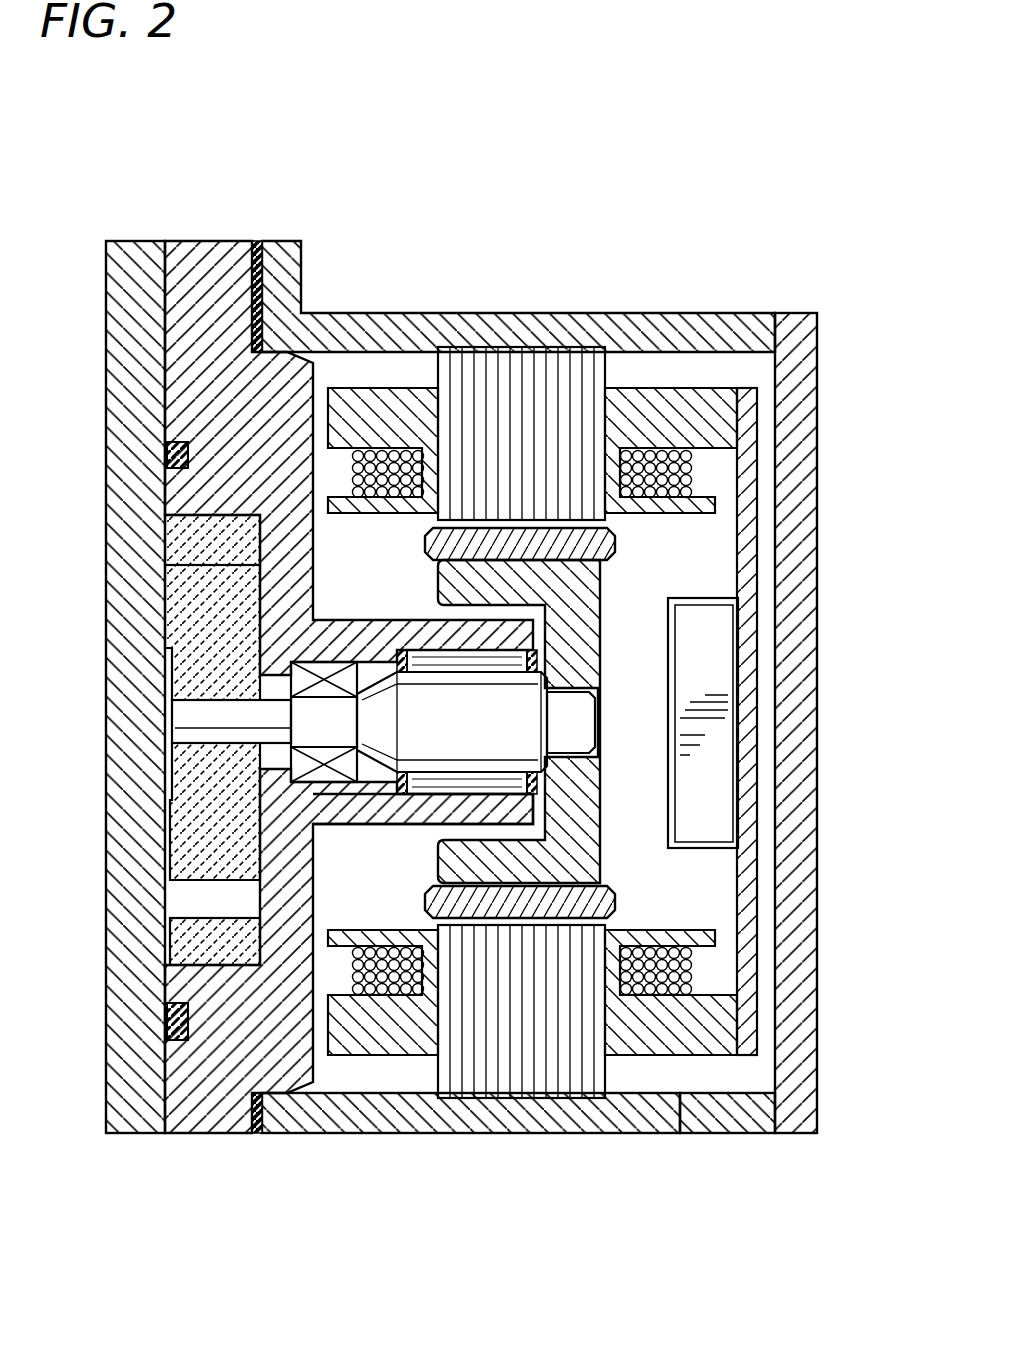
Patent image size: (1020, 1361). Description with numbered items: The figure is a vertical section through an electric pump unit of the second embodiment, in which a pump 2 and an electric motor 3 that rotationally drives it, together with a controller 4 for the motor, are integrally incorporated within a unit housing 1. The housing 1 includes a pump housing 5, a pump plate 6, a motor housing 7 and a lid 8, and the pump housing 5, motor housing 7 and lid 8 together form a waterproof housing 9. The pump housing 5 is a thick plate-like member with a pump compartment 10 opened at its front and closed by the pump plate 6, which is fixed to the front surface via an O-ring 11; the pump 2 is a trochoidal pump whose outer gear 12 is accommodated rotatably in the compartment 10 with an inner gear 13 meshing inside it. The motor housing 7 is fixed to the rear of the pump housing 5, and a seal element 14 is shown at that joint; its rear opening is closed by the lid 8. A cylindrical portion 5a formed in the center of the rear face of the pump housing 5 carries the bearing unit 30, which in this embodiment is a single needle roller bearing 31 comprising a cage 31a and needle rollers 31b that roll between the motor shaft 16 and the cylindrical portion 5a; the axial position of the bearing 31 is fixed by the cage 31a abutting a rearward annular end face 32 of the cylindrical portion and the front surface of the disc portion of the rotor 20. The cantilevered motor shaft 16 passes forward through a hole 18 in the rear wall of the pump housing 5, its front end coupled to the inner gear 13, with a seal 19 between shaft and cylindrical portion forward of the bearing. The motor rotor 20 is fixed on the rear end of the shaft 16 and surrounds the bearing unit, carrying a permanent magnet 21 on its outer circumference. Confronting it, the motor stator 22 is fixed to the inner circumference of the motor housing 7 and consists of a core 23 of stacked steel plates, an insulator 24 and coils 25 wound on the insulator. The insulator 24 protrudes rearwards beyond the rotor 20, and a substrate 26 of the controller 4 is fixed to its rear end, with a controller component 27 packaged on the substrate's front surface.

The pump housing 1 is at (218, 200).
The pump 2 is at (163, 948).
The electric motor 3 is at (610, 592).
The controller 4 is at (712, 863).
The pump housing 5 is at (212, 1134).
The cylindrical portion 5a is at (377, 828).
The pump plate 6 is at (118, 1117).
The motor housing 7 is at (393, 1134).
The lid 8 is at (808, 1072).
The waterproof housing 9 is at (741, 1134).
The pump compartment 10 is at (185, 522).
The O-ring 11 is at (170, 462).
The outer gear 12 is at (180, 538).
The inner gear 13 is at (170, 612).
The seal gap 14 is at (257, 240).
The motor shaft 16 is at (585, 725).
The hole 18 is at (262, 690).
The seal 19 is at (322, 765).
The motor rotor 20 is at (435, 575).
The permanent magnet 21 is at (615, 905).
The motor stator 22 is at (541, 355).
The core 23 is at (500, 1094).
The insulator 24 is at (668, 1052).
The coils 25 is at (690, 972).
The substrate 26 is at (745, 542).
The component 27 is at (688, 700).
The bearing unit 30 is at (433, 650).
The needle roller bearing 31 is at (560, 660).
The cage 31a is at (545, 786).
The needle rollers 31b is at (495, 652).
The annular end face 32 is at (400, 650).